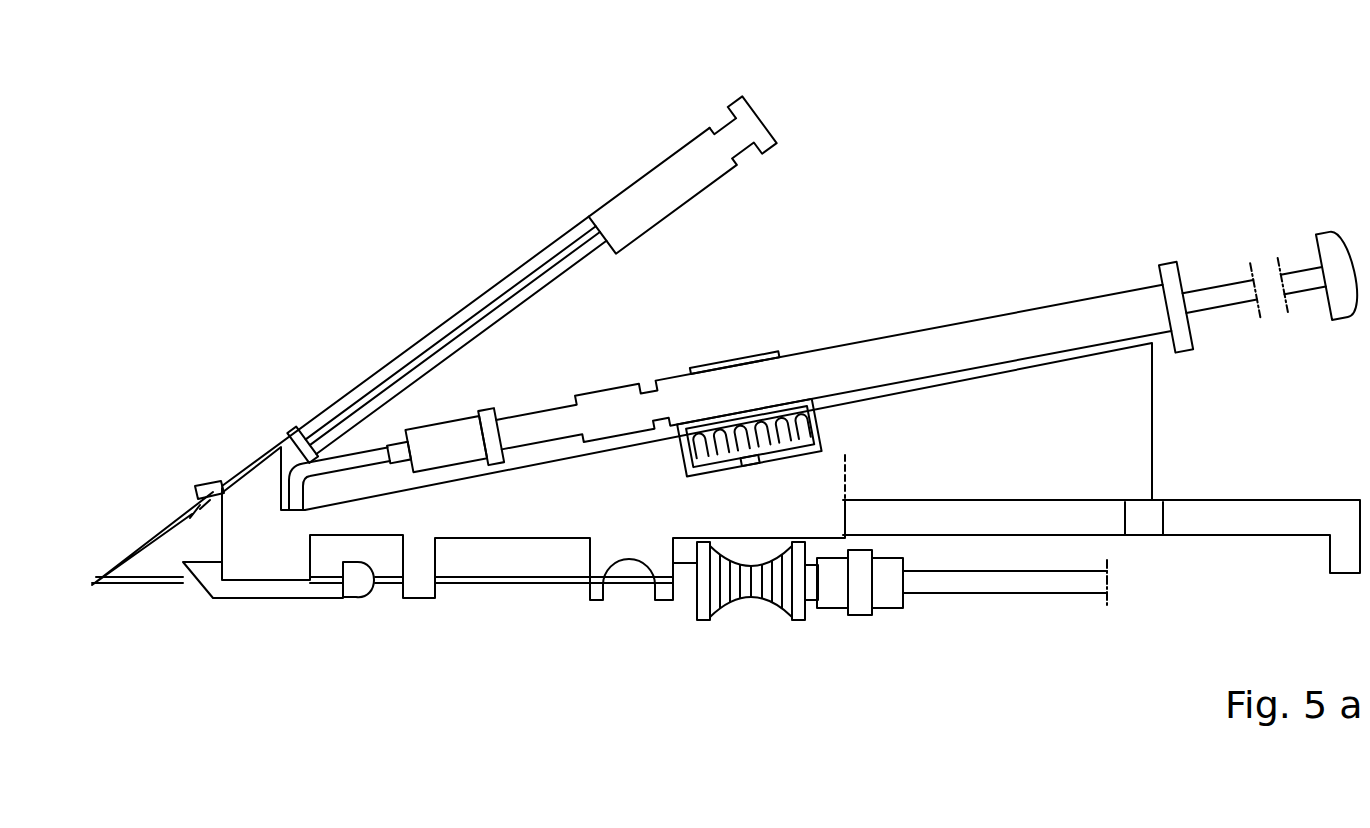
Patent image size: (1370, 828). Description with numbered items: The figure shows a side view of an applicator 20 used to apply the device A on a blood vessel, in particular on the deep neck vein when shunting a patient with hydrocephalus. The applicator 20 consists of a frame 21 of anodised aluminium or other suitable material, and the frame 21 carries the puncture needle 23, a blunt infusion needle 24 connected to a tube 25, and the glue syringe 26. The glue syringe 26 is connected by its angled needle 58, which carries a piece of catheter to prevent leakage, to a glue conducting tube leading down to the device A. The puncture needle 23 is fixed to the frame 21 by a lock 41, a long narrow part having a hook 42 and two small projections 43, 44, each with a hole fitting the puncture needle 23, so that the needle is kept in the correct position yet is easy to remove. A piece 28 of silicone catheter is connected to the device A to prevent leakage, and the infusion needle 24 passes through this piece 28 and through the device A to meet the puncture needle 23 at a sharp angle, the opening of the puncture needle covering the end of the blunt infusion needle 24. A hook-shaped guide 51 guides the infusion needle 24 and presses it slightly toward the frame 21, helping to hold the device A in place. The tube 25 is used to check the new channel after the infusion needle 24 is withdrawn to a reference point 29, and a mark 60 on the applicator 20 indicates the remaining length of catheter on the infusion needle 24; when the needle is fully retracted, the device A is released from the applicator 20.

The applicator 20 is at (1010, 192).
The frame 21 is at (1128, 432).
The puncture needle 23 is at (148, 562).
The infusion needle 24 is at (163, 585).
The tube 25 is at (998, 583).
The glue syringe 26 is at (910, 348).
The piece of silicone catheter 28 is at (531, 580).
The reference point 29 is at (848, 486).
The lock 41 is at (412, 347).
The hook 42 is at (212, 484).
The projection 43 is at (287, 437).
The projection 44 is at (641, 200).
The hook-shaped guide 51 is at (420, 585).
The angled needle 58 is at (444, 424).
The mark 60 is at (1145, 520).
The device A is at (300, 618).